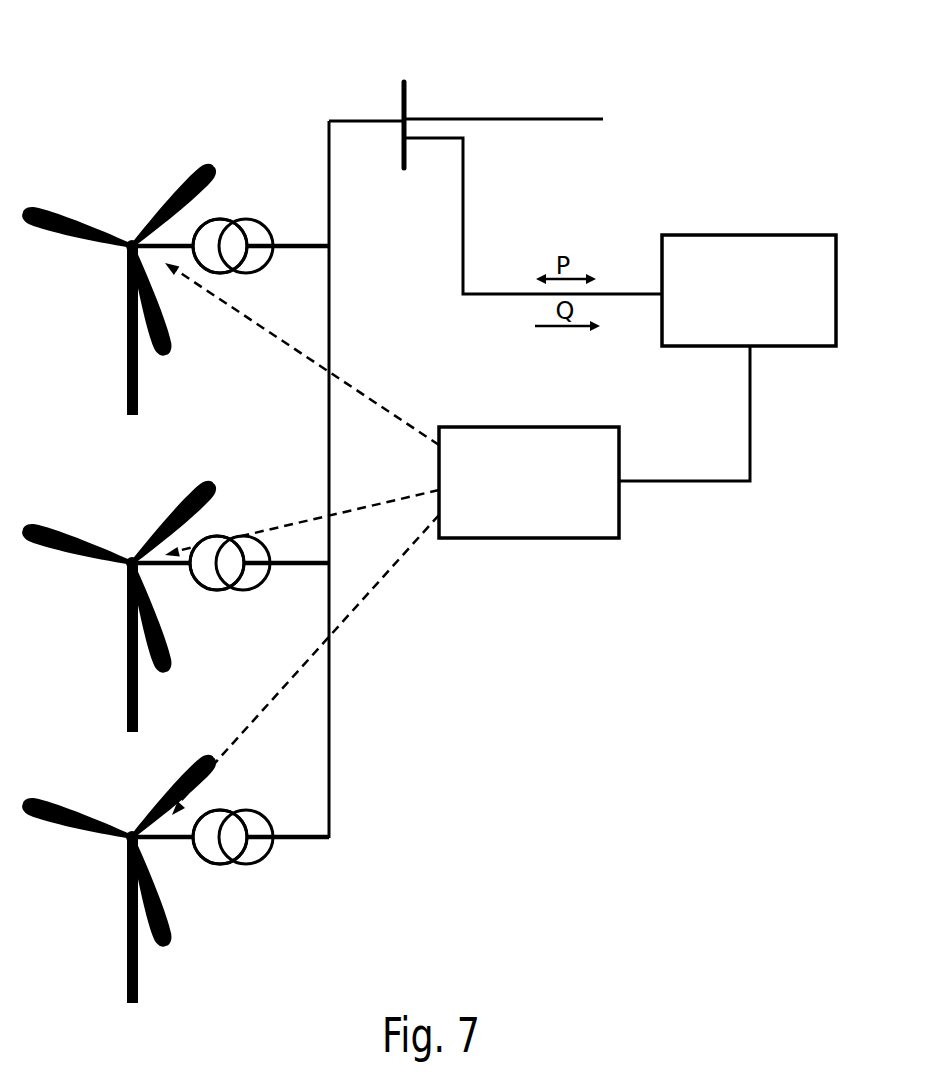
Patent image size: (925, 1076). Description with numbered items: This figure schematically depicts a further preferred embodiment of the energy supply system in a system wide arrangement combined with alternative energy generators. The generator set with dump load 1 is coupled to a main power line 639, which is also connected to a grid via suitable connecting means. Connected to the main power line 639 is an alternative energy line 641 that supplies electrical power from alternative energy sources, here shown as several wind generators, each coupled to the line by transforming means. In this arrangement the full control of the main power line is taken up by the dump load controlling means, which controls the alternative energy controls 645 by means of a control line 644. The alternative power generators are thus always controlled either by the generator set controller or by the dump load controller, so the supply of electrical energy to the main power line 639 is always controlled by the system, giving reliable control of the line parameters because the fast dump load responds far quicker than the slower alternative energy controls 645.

The generator set with dump load 1 is at (778, 210).
The main power line 639 is at (400, 99).
The alternative energy line 641 is at (333, 120).
The control line 644 is at (752, 450).
The alternative energy controls 645 is at (610, 557).